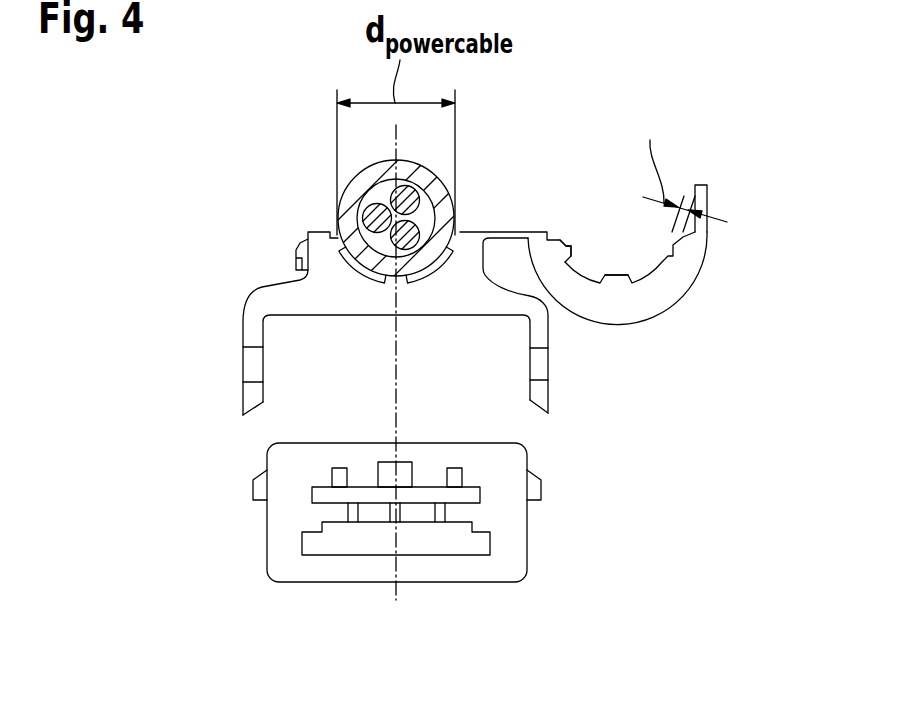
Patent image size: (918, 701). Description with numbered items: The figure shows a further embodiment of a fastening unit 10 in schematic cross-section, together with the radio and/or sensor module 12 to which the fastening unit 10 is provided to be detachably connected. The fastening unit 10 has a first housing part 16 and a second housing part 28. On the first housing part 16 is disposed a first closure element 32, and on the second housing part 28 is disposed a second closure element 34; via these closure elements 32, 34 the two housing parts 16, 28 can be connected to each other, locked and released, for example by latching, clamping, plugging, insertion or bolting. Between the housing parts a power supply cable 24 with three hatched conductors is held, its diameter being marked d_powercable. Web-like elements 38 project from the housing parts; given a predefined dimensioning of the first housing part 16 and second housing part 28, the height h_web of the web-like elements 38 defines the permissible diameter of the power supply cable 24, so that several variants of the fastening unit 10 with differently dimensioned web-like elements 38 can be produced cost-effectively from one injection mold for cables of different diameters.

The fastening unit 10 is at (235, 165).
The radio and/or sensor module 12 is at (245, 545).
The first housing part 16 is at (282, 302).
The power supply cable 24 is at (423, 177).
The second housing part 28 is at (686, 260).
The first closure element 32 is at (298, 248).
The second closure element 34 is at (710, 190).
The web-like element 38 is at (335, 236).